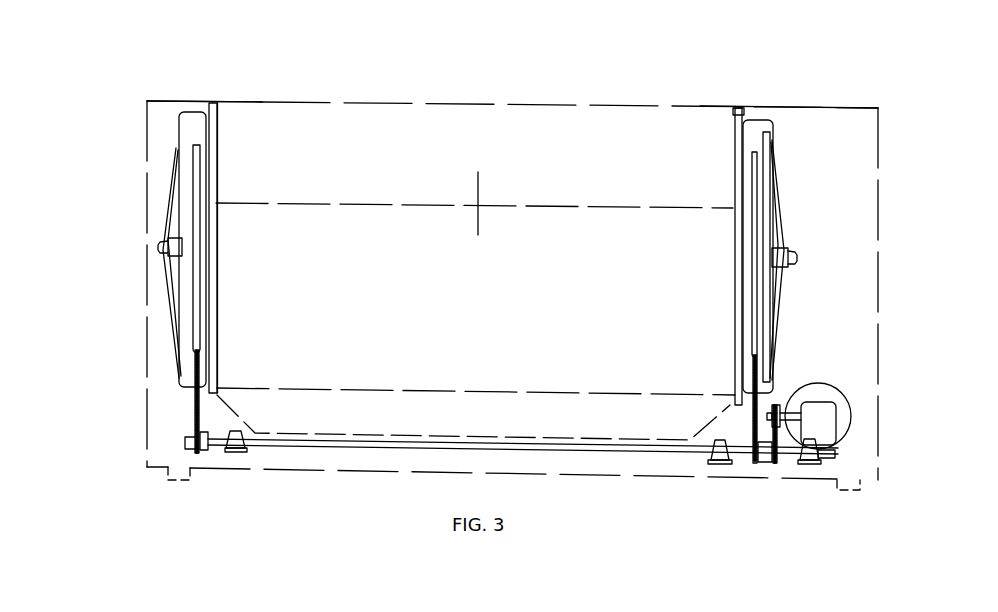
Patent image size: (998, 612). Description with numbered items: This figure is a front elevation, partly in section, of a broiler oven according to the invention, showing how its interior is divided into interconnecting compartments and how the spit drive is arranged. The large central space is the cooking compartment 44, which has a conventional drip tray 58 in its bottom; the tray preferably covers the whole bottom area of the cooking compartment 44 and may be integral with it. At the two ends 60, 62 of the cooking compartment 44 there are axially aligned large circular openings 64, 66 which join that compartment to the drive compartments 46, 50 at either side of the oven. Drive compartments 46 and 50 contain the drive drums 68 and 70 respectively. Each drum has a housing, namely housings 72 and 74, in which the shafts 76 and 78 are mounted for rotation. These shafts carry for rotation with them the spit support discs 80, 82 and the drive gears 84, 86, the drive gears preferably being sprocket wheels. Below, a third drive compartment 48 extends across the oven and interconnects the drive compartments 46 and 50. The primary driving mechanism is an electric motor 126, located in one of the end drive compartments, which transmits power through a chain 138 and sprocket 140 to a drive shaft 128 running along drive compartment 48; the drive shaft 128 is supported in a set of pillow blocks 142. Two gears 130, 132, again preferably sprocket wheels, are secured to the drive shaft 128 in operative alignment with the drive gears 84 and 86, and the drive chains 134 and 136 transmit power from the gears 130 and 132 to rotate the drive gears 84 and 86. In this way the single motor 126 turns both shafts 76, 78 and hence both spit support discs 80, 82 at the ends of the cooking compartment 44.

The cooking compartment 44 is at (474, 194).
The drive compartment 46 is at (810, 300).
The drive compartment 48 is at (172, 443).
The drive compartment 50 is at (162, 301).
The drip tray 58 is at (237, 413).
The end 60 is at (730, 107).
The end 62 is at (217, 133).
The circular opening 64 is at (677, 172).
The circular opening 66 is at (252, 158).
The drive drum 68 is at (757, 118).
The drive drum 70 is at (195, 112).
The housing 72 is at (773, 148).
The housing 74 is at (177, 150).
The shaft 76 is at (797, 256).
The shaft 78 is at (158, 246).
The spit support disc 80 is at (741, 108).
The spit support disc 82 is at (216, 104).
The drive gear 84 is at (757, 183).
The drive gear 86 is at (195, 190).
The electric motor 126 is at (837, 398).
The drive shaft 128 is at (187, 443).
The gear 130 is at (758, 462).
The gear 132 is at (203, 450).
The drive chain 134 is at (753, 418).
The drive chain 136 is at (193, 409).
The chain 138 is at (777, 405).
The sprocket 140 is at (766, 457).
The pillow blocks 142 is at (240, 443).